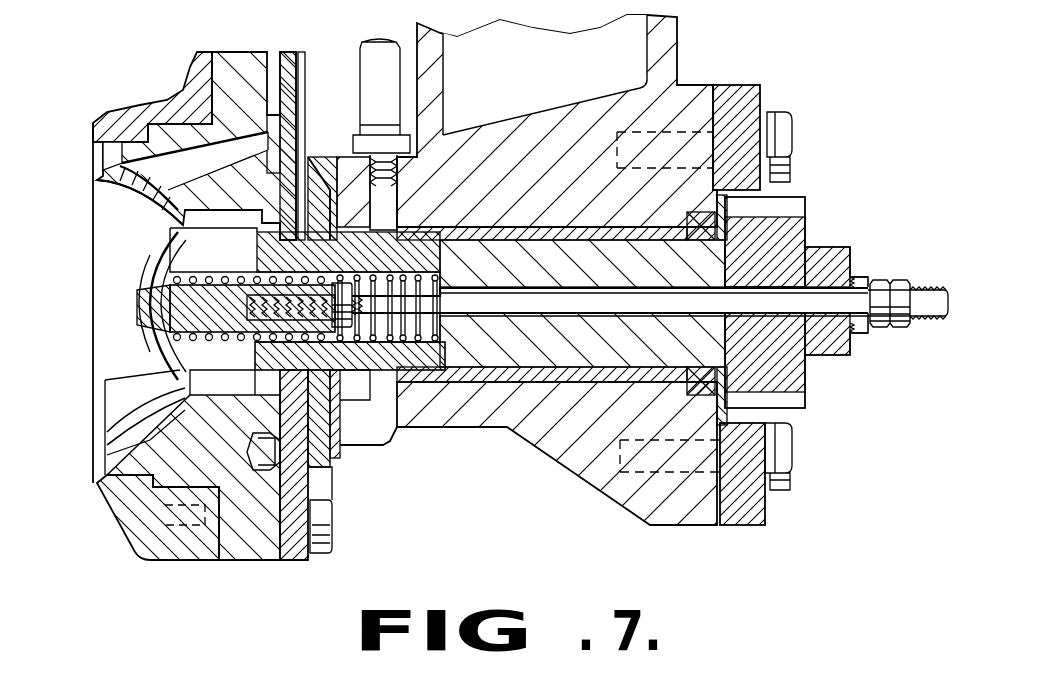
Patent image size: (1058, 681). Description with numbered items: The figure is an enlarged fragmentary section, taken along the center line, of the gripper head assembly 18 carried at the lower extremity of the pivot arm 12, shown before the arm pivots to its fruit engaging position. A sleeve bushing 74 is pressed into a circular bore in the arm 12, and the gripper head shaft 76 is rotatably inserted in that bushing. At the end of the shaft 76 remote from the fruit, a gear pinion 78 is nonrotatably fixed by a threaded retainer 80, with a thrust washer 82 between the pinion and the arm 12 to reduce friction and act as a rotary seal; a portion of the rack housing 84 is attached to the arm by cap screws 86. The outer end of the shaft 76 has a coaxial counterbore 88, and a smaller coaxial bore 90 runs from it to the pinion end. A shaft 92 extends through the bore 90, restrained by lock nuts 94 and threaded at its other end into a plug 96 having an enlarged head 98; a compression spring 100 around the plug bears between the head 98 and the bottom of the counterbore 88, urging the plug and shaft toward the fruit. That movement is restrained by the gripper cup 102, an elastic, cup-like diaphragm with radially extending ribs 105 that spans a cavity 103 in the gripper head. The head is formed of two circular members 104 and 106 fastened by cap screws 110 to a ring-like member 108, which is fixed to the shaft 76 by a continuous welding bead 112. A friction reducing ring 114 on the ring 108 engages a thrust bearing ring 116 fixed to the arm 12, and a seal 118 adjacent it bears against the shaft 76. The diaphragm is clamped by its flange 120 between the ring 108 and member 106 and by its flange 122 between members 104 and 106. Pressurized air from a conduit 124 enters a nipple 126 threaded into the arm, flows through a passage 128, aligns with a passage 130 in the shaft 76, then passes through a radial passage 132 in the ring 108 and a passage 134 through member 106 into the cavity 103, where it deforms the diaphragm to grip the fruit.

The pivot arm 12 is at (528, 243).
The gripper head assembly 18 is at (137, 576).
The sleeve bushing 74 is at (458, 375).
The gripper head shaft 76 is at (512, 350).
The gear pinion 78 is at (802, 233).
The threaded retainer 80 is at (848, 348).
The thrust washer 82 is at (725, 212).
The rack housing 84 is at (740, 93).
The cap screws 86 is at (788, 140).
The counterbore 88 is at (430, 352).
The bore 90 is at (507, 282).
The shaft 92 is at (822, 300).
The lock nuts 94 is at (882, 283).
The plug 96 is at (140, 282).
The enlarged head 98 is at (152, 338).
The compression spring 100 is at (176, 242).
The gripper cup 102 is at (152, 377).
The cavity 103 is at (150, 428).
The gripper head member 104 is at (115, 497).
The ribs 105 is at (105, 185).
The gripper head member 106 is at (240, 562).
The ring-like member 108 is at (300, 562).
The cap screws 110 is at (320, 555).
The welding bead 112 is at (262, 359).
The friction reducing ring 114 is at (327, 165).
The thrust bearing ring 116 is at (322, 462).
The seal 118 is at (358, 410).
The flange 120 is at (252, 420).
The flange 122 is at (158, 97).
The conduit 124 is at (384, 42).
The nipple 126 is at (444, 100).
The passage 128 is at (446, 138).
The passage 130 is at (290, 262).
The passage 132 is at (302, 150).
The passage 134 is at (236, 133).